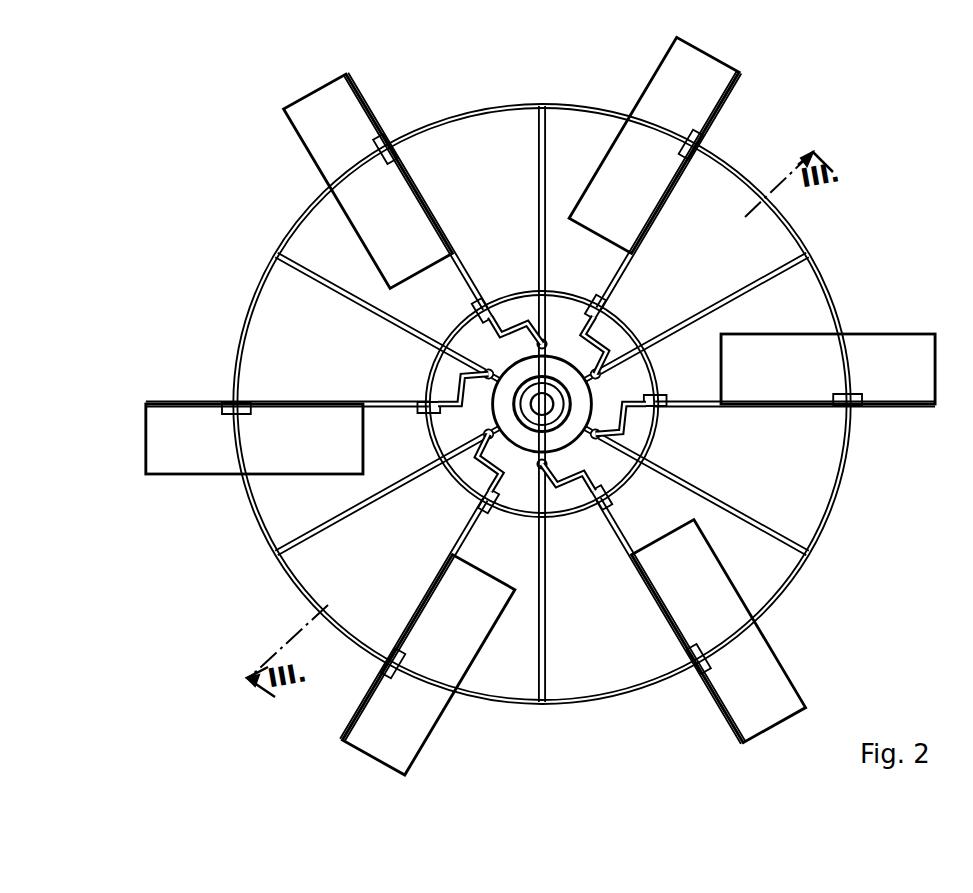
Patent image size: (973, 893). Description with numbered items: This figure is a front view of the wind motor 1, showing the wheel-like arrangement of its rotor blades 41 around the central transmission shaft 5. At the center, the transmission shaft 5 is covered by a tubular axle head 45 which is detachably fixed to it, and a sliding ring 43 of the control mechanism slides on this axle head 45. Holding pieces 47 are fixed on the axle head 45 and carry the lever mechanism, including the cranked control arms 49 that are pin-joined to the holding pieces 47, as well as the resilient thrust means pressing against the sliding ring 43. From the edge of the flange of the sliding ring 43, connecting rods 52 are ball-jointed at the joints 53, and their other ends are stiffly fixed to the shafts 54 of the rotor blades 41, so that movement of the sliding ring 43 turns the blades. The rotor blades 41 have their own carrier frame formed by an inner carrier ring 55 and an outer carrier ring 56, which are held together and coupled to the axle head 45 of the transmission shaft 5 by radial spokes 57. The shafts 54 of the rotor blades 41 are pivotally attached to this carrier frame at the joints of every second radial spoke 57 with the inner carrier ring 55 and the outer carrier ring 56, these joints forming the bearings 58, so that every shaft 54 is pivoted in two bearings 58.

The wind motor 1 is at (540, 406).
The transmission shaft 5 is at (535, 418).
The rotor blades 41 is at (327, 152).
The sliding ring 43 is at (490, 412).
The tubular axle head 45 is at (530, 398).
The holding pieces 47 is at (550, 382).
The cranked control arms 49 is at (548, 352).
The connecting rods 52 is at (518, 318).
The ball joints 53 is at (547, 322).
The shafts of rotor blades 54 is at (437, 212).
The inner carrier ring 55 is at (566, 518).
The outer carrier ring 56 is at (832, 517).
The radial spokes 57 is at (733, 295).
The bearings 58 is at (699, 145).